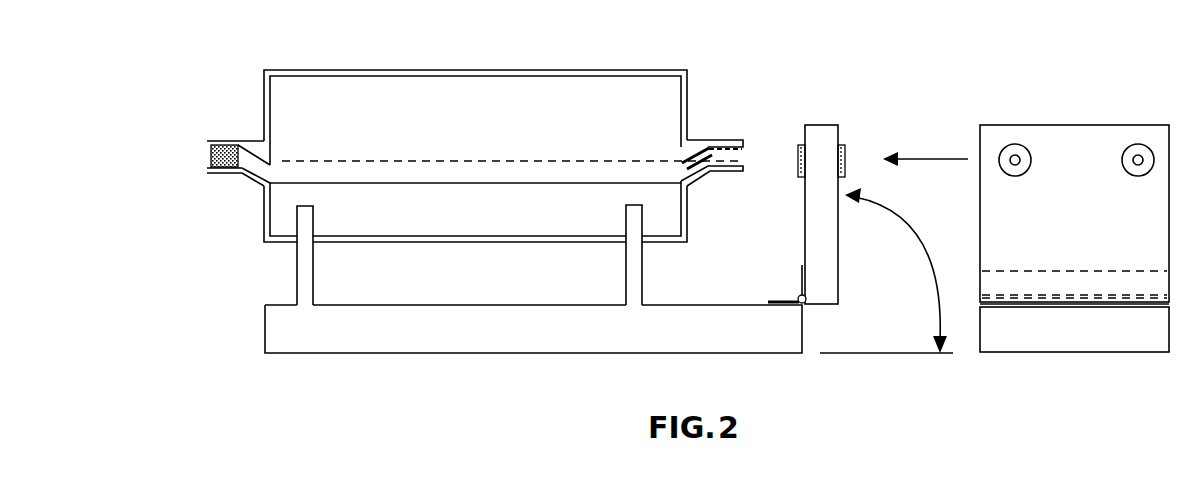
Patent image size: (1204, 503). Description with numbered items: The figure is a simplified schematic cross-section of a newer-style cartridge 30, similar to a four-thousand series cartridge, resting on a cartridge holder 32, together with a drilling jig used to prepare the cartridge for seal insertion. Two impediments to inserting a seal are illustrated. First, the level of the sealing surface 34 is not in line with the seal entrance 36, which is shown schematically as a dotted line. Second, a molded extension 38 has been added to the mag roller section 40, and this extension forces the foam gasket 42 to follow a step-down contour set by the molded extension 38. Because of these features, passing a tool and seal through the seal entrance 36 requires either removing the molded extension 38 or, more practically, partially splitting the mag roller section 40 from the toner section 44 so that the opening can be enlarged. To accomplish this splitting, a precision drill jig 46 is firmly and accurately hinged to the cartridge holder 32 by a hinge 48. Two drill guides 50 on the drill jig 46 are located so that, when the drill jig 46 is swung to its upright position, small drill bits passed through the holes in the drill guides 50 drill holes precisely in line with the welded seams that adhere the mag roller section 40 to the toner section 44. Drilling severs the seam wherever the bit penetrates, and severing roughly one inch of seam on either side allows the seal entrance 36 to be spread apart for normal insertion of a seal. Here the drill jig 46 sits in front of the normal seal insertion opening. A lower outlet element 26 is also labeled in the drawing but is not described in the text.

The outlet pipe 26 is at (693, 173).
The cartridge 30 is at (325, 60).
The cartridge holder 32 is at (425, 335).
The sealing surface 34 is at (505, 195).
The seal entrance 36 is at (745, 157).
The molded extension 38 is at (692, 148).
The mag roller section 40 is at (505, 70).
The foam gasket 42 is at (745, 148).
The toner section 44 is at (268, 220).
The drill jig 46 is at (840, 260).
The hinge 48 is at (800, 295).
The drill guides 50 is at (845, 147).